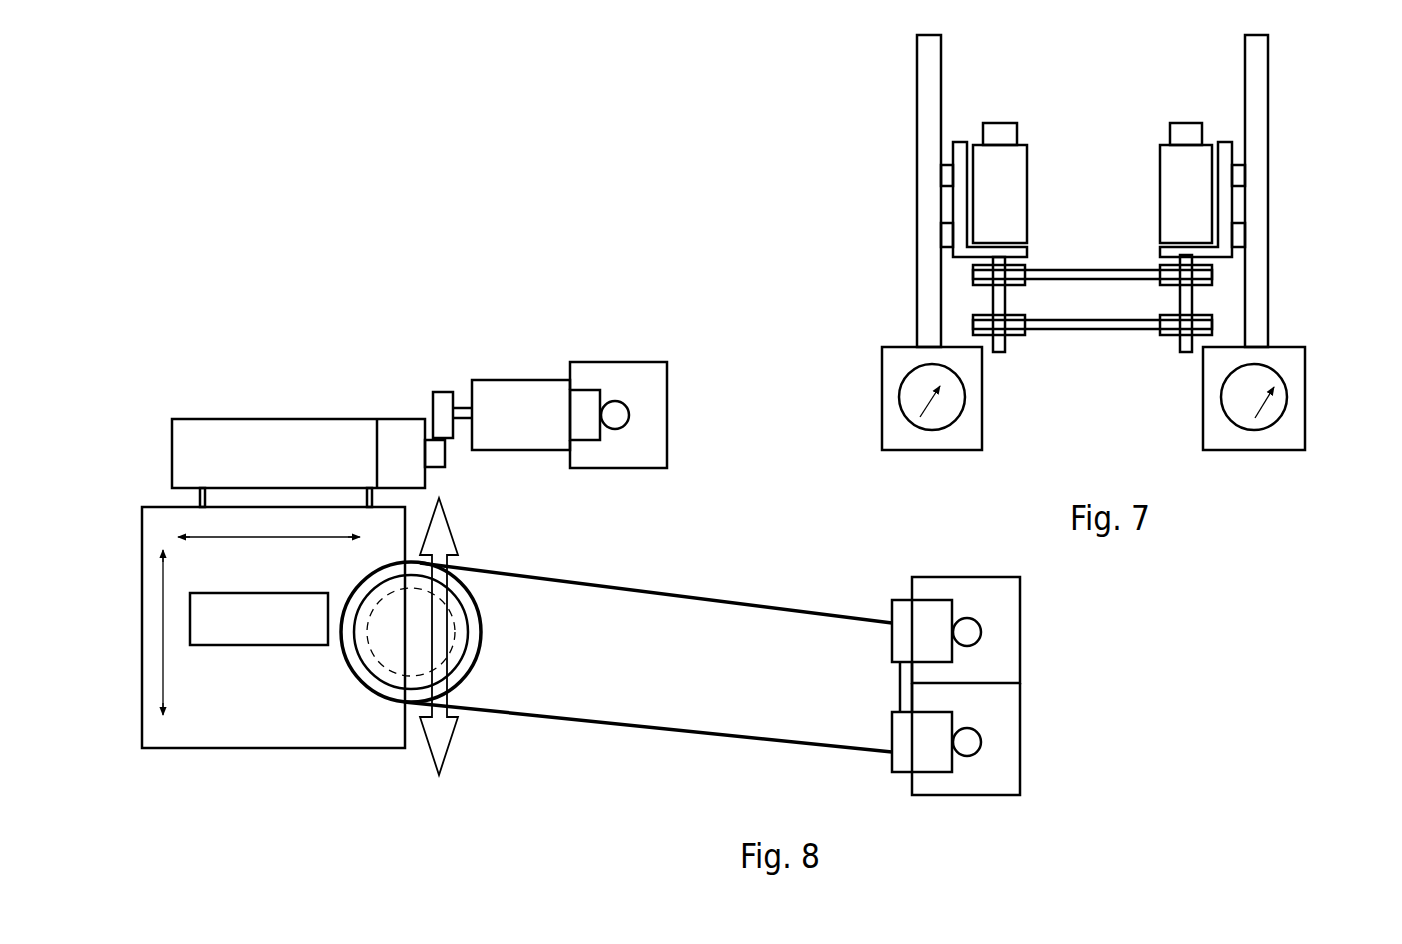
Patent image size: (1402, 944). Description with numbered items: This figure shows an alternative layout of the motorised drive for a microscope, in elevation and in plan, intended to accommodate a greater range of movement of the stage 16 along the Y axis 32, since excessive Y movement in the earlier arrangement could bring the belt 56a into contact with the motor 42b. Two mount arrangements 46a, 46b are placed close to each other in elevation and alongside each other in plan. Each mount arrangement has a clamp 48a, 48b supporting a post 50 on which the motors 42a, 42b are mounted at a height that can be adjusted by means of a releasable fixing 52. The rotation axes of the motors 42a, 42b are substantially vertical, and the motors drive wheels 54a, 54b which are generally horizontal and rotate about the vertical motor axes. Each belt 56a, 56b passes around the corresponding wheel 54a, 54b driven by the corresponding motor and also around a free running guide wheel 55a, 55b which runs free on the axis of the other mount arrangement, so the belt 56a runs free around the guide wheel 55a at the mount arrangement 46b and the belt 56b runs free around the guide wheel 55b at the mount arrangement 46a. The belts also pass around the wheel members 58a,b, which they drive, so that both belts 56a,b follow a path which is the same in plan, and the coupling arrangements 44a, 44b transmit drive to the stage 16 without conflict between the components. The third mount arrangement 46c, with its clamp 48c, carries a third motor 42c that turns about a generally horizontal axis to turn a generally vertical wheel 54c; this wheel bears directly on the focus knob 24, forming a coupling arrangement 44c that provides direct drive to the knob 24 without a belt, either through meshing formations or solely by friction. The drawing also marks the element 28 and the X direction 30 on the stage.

In FIG. 8, the stage 16 is at (275, 742).
In FIG. 8, the focus knob 24 is at (445, 462).
In FIG. 8, the workpiece holder 28 is at (259, 619).
In FIG. 8, the X direction 30 is at (252, 540).
In FIG. 8, the Y axis 32 is at (167, 677).
In FIG. 7, the motor 42a is at (1018, 143).
In FIG. 7, the motor 42b is at (1165, 143).
In FIG. 8, the third motor 42c is at (537, 380).
In FIG. 7, the coupling arrangement 44a is at (1042, 182).
In FIG. 8, the coupling arrangement 44a is at (898, 705).
In FIG. 7, the coupling arrangement 44b is at (1140, 212).
In FIG. 8, the coupling arrangement 44b is at (898, 668).
In FIG. 8, the coupling arrangement 44c is at (410, 395).
In FIG. 7, the mount arrangement 46a is at (890, 299).
In FIG. 8, the mount arrangement 46a is at (878, 777).
In FIG. 7, the mount arrangement 46b is at (1287, 260).
In FIG. 8, the mount arrangement 46b is at (868, 594).
In FIG. 8, the third mount arrangement 46c is at (622, 418).
In FIG. 7, the clamp 48a is at (905, 452).
In FIG. 8, the clamp 48a is at (1010, 755).
In FIG. 7, the clamp 48b is at (1235, 452).
In FIG. 8, the clamp 48b is at (1010, 593).
In FIG. 8, the clamp 48c is at (640, 373).
In FIG. 7, the post 50 is at (926, 130).
In FIG. 8, the post 50 is at (978, 632).
In FIG. 7, the releasable fixing 52 is at (953, 197).
In FIG. 7, the wheel 54a is at (1027, 270).
In FIG. 7, the wheel 54b is at (1168, 340).
In FIG. 8, the wheel 54c is at (442, 392).
In FIG. 7, the guide wheel 55a is at (1160, 270).
In FIG. 7, the guide wheel 55b is at (1010, 340).
In FIG. 7, the belt 56a is at (1070, 281).
In FIG. 7, the belt 56b is at (1122, 320).
In FIG. 8, the belts 56a,b is at (692, 600).
In FIG. 8, the wheel members 58a,b is at (470, 643).